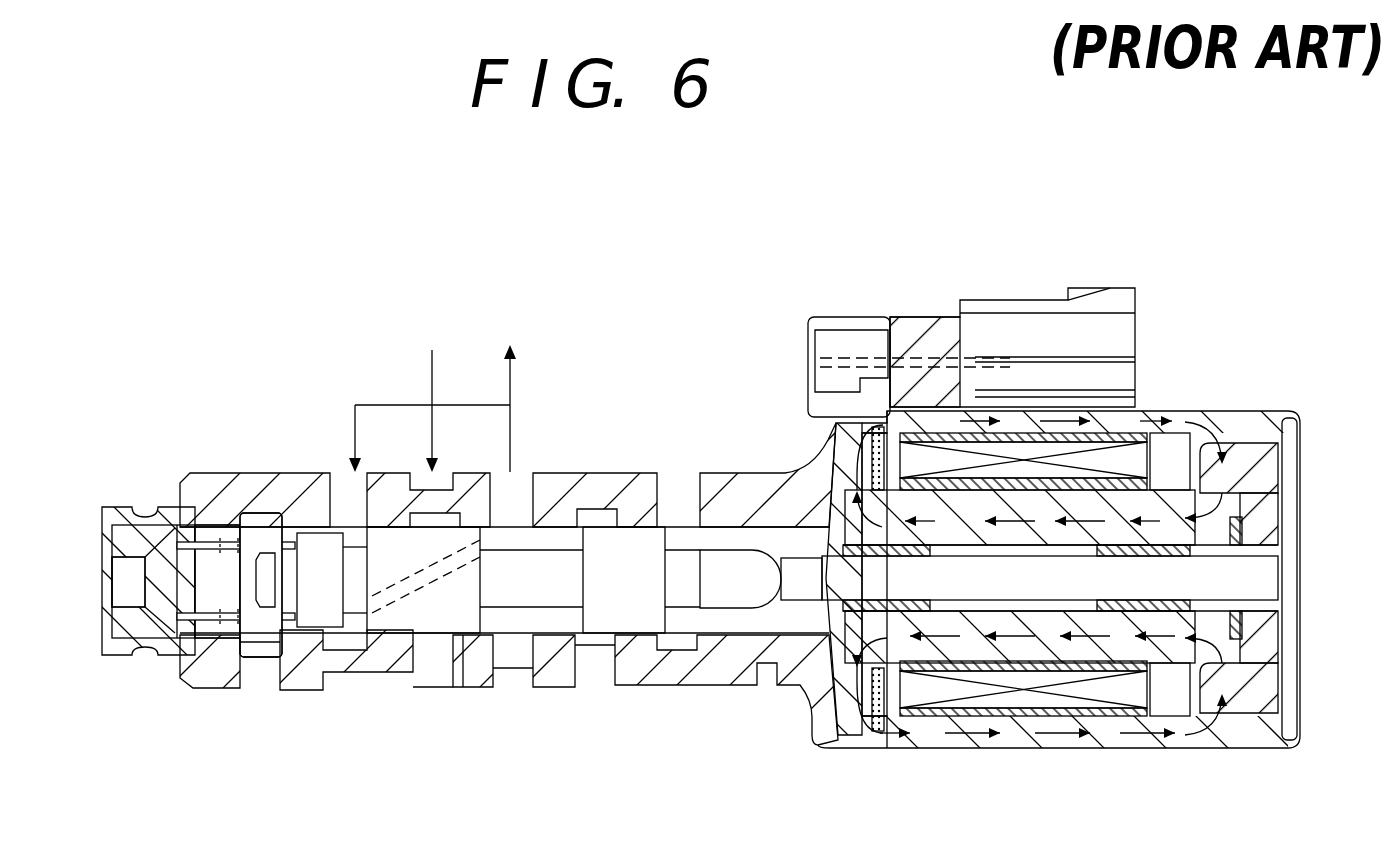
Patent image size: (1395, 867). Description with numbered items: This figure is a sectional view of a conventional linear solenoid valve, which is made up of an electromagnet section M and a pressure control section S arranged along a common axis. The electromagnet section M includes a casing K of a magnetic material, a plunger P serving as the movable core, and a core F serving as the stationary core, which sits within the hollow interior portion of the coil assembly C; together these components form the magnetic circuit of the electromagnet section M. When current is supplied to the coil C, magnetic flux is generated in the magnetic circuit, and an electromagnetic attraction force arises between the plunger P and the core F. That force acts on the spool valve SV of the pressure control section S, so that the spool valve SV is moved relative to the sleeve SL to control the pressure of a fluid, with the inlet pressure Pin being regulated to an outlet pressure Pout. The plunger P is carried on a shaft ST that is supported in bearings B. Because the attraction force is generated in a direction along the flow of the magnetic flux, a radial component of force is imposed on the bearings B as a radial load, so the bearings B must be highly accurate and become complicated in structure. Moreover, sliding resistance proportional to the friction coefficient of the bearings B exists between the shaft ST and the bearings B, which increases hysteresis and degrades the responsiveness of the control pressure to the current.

The pressure control section S is at (617, 360).
The sleeve SL is at (572, 473).
The spool valve SV is at (640, 605).
The input pressure port Pin is at (428, 389).
The output pressure port Pout is at (537, 385).
The electromagnet section M is at (1170, 322).
The casing K is at (1258, 425).
The coil C is at (935, 470).
The bearings B is at (905, 548).
The core F is at (1182, 443).
The plunger P is at (1268, 493).
The shaft ST is at (1245, 585).